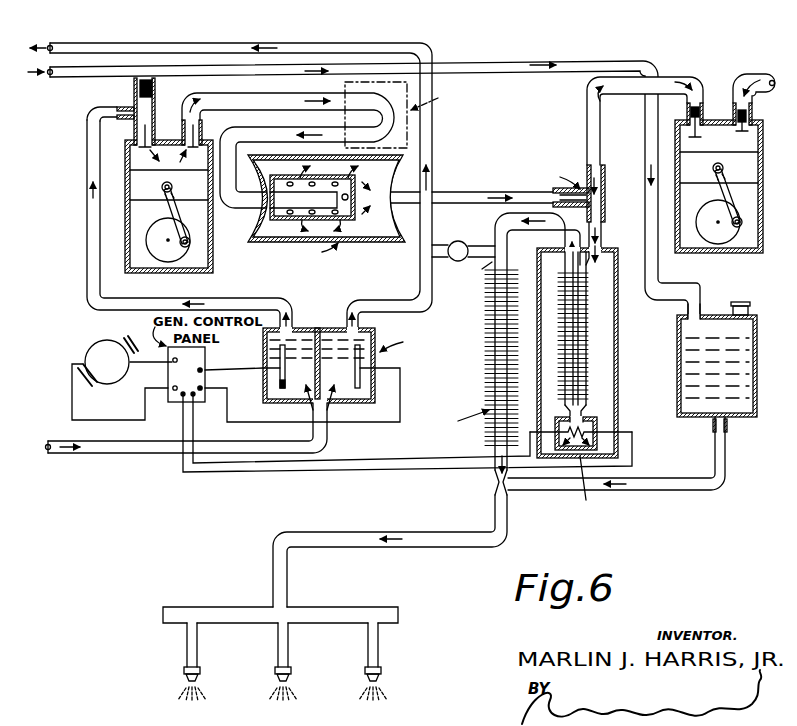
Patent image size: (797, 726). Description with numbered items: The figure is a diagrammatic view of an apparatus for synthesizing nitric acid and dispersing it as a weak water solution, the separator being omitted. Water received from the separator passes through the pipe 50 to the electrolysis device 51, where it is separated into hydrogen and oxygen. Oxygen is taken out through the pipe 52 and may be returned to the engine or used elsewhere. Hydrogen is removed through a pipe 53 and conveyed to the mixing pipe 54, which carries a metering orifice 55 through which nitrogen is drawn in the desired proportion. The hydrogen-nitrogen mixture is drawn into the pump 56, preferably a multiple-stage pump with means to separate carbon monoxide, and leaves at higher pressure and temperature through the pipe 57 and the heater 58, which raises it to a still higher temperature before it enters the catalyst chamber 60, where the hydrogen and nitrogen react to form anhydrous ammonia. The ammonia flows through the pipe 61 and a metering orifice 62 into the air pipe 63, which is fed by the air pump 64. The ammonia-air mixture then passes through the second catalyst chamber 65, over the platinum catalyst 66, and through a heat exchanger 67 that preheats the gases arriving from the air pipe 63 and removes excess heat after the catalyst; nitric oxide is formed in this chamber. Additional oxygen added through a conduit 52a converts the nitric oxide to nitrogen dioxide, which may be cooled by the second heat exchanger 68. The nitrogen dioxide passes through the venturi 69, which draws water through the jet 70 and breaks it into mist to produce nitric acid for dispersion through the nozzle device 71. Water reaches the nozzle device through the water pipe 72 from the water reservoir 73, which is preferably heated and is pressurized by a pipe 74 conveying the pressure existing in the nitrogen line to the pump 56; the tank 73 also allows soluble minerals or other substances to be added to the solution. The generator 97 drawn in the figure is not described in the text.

The pipe 50 is at (151, 453).
The electrolysis device 51 is at (266, 392).
The pipe 52 is at (395, 300).
The conduit 52a is at (445, 246).
The pipe 53 is at (96, 274).
The mixing pipe 54 is at (155, 109).
The metering orifice 55 is at (134, 92).
The pump 56 is at (130, 214).
The pipe 57 is at (240, 109).
The heater 58 is at (378, 81).
The catalyst chamber 60 is at (258, 226).
The pipe 61 is at (458, 193).
The metering orifice 62 is at (605, 196).
The air pipe 63 is at (673, 79).
The air pump 64 is at (733, 252).
The second catalyst chamber 65 is at (620, 386).
The platinum catalyst 66 is at (600, 423).
The heat exchanger 67 is at (588, 322).
The second heat exchanger 68 is at (490, 364).
The venturi 69 is at (497, 486).
The jet 70 is at (510, 497).
The nozzle device 71 is at (258, 607).
The water pipe 72 is at (676, 481).
The water reservoir 73 is at (738, 406).
The pipe 74 is at (515, 65).
The generator 97 is at (111, 384).